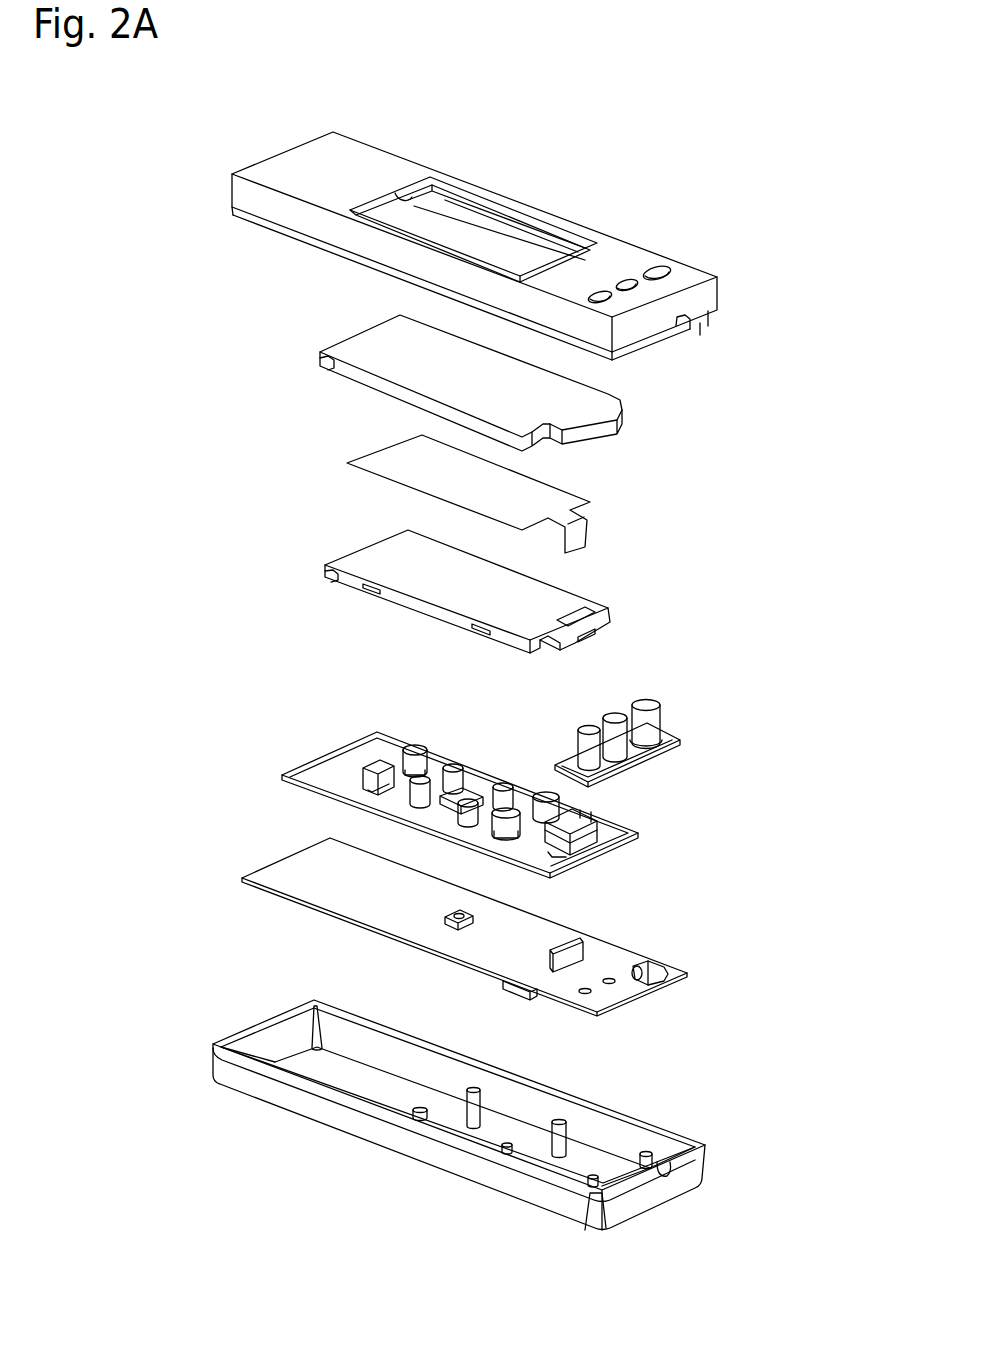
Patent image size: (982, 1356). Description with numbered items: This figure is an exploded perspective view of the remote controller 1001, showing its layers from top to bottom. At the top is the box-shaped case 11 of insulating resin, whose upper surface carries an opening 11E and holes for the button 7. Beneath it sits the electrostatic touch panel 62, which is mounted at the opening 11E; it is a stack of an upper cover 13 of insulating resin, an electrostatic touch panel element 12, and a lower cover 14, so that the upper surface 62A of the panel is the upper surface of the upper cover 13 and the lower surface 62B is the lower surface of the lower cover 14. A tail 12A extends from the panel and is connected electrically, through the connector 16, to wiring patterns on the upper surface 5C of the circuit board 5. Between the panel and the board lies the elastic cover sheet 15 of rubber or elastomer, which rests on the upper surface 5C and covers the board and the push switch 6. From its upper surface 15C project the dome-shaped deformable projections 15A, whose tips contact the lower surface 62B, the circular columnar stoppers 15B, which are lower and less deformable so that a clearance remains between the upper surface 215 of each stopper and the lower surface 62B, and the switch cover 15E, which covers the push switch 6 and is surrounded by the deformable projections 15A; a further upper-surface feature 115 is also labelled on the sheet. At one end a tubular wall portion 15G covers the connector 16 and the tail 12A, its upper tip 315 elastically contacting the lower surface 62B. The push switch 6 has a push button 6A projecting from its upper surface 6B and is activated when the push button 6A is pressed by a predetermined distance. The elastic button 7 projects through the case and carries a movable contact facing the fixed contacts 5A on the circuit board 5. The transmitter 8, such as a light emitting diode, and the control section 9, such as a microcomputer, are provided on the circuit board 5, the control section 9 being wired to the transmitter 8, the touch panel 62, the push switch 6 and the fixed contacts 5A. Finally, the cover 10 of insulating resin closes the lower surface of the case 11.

The remote controller 1001 is at (645, 218).
The case 11 is at (662, 255).
The opening 11E is at (438, 183).
The electrostatic touch panel 62 is at (240, 308).
The upper surface 62A is at (392, 343).
The lower surface 62B is at (340, 576).
The upper cover 13 is at (347, 350).
The electrostatic touch panel element 12 is at (355, 457).
The tail 12A is at (578, 530).
The lower cover 14 is at (352, 543).
The cover sheet 15 is at (338, 745).
The board surface 115 is at (367, 788).
The deformable projections 15A is at (407, 745).
The stoppers 15B is at (430, 783).
The upper surface 15C is at (377, 747).
The switch cover 15E is at (458, 797).
The tubular wall portion 15G is at (567, 827).
The upper surface of stopper 215 is at (452, 762).
The upper tip of tubular wall portion 315 is at (567, 810).
The button 7 is at (663, 723).
The circuit board 5 is at (647, 955).
The fixed contacts 5A is at (612, 981).
The upper surface 5C is at (542, 935).
The push switch 6 is at (447, 918).
The push button 6A is at (497, 901).
The upper surface 6B is at (470, 912).
The connector 16 is at (587, 943).
The transmitter 8 is at (683, 973).
The control section 9 is at (538, 1002).
The cover 10 is at (360, 1145).